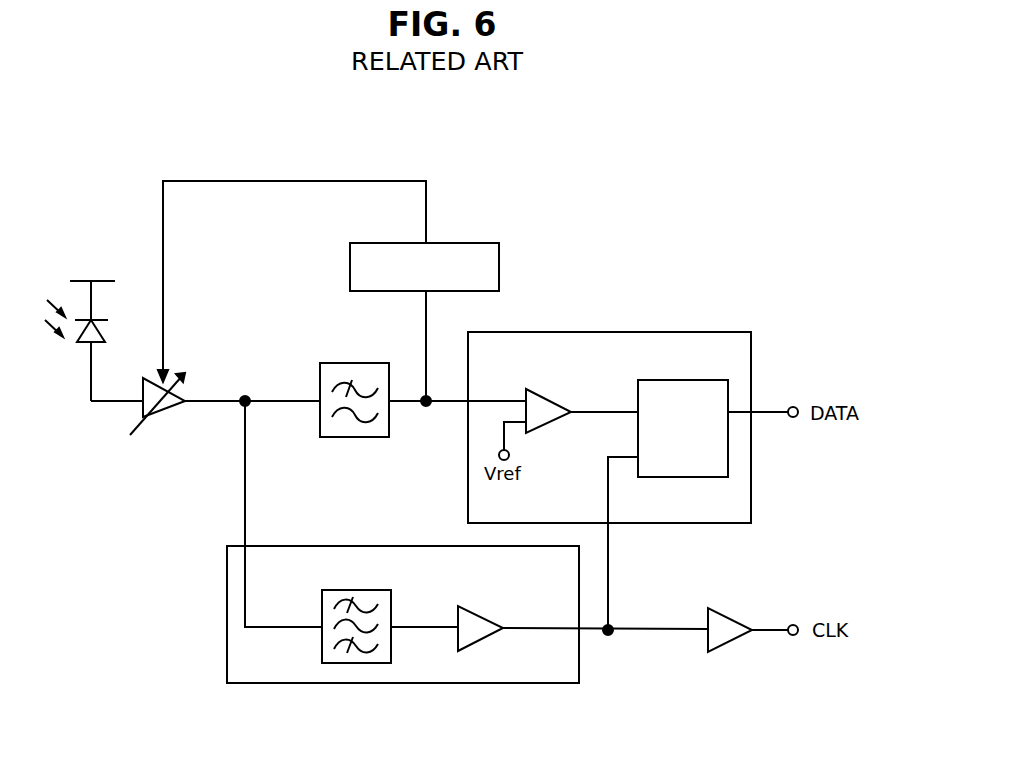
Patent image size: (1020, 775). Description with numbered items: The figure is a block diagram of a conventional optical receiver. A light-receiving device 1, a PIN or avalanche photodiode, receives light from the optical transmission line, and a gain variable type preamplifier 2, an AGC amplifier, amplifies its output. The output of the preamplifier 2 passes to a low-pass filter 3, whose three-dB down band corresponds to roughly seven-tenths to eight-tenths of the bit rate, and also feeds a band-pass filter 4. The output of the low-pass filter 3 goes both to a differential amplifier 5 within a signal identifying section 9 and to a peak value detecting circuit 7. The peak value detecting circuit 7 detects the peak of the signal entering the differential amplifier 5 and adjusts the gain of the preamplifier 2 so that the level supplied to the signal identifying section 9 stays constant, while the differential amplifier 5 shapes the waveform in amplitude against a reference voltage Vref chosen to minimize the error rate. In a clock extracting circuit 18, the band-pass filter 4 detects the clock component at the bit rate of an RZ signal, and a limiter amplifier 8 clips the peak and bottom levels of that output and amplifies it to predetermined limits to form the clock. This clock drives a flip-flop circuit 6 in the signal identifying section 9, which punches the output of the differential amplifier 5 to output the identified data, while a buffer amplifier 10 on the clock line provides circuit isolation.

The light-receiving device 1 is at (84, 343).
The gain variable type preamplifier 2 is at (172, 408).
The low-pass filter 3 is at (356, 363).
The band-pass filter 4 is at (356, 590).
The differential amplifier 5 is at (548, 395).
The flip-flop circuit 6 is at (675, 380).
The peak value detecting circuit 7 is at (499, 265).
The limiter amplifier 8 is at (483, 612).
The signal identifying section 9 is at (610, 332).
The buffer amplifier 10 is at (735, 618).
The clock extracting circuit 18 is at (390, 683).